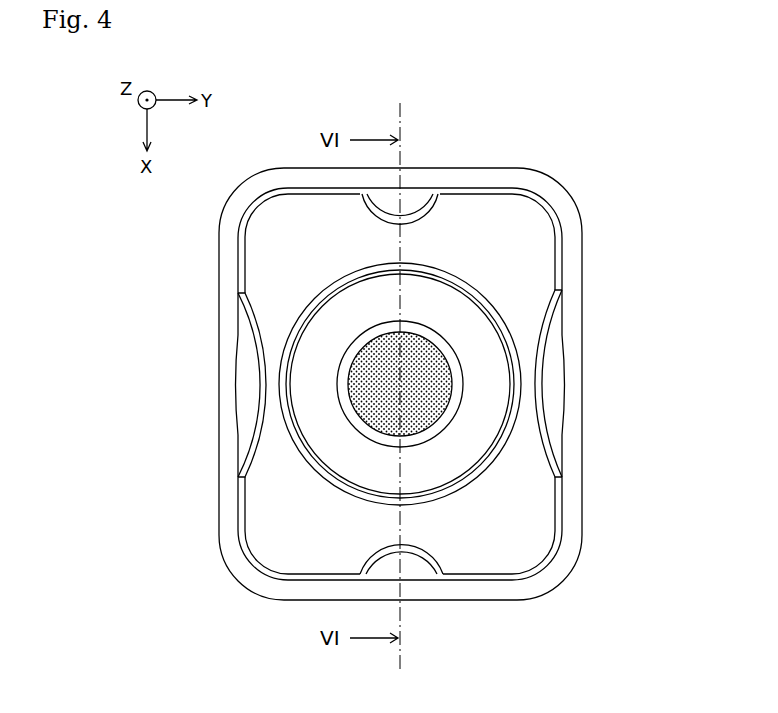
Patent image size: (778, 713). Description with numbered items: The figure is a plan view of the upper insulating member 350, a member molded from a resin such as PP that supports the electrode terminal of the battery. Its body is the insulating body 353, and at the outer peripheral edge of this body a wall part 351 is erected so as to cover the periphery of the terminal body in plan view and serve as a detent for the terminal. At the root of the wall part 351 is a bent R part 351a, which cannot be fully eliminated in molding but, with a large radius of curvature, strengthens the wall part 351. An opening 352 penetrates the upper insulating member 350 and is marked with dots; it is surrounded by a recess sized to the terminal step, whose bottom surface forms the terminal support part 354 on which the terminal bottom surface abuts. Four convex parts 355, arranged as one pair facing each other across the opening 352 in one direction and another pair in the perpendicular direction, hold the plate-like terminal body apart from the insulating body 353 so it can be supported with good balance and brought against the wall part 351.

The upper insulating member 350 is at (405, 386).
The wall part 351 is at (571, 228).
The R part 351a is at (486, 192).
The opening 352 is at (423, 364).
The insulating body 353 is at (332, 244).
The terminal support part 354 is at (340, 325).
The convex part 355 is at (424, 196).